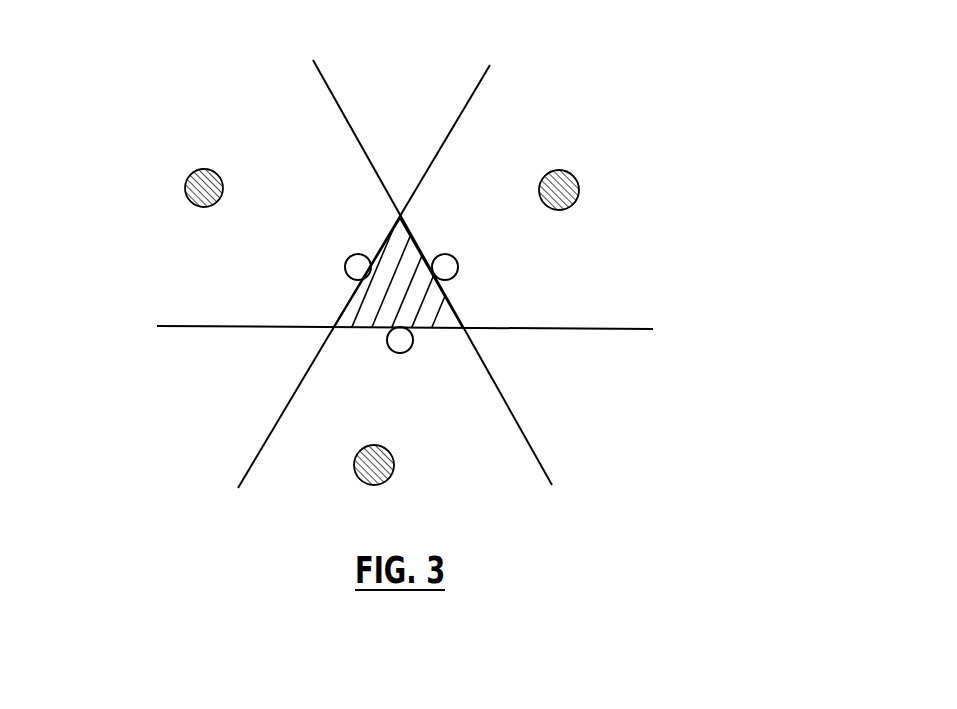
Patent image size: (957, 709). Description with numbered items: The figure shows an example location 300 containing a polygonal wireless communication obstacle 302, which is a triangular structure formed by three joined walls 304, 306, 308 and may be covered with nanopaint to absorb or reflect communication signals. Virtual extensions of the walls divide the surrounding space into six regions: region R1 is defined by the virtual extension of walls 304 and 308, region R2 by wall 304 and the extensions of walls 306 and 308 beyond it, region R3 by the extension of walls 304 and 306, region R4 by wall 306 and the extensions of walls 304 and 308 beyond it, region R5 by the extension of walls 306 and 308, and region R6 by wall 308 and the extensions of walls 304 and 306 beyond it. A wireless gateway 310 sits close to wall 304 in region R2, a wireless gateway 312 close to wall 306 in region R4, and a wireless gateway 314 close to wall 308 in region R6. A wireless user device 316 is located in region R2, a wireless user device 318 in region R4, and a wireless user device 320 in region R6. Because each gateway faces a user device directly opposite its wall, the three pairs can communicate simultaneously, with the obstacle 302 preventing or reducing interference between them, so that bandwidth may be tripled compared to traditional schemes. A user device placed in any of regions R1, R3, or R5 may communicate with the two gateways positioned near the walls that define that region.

The location 300 is at (92, 56).
The polygonal wireless communication obstacle 302 is at (380, 240).
The wall 304 is at (438, 312).
The wall 306 is at (416, 247).
The wall 308 is at (316, 272).
The wireless gateway 310 is at (380, 367).
The wireless gateway 312 is at (474, 263).
The wireless gateway 314 is at (314, 257).
The wireless user device 316 is at (408, 466).
The wireless user device 318 is at (587, 176).
The wireless user device 320 is at (189, 168).
The region R1 is at (405, 343).
The region R2 is at (274, 470).
The region R3 is at (560, 455).
The region R4 is at (615, 309).
The region R5 is at (364, 270).
The region R6 is at (420, 272).